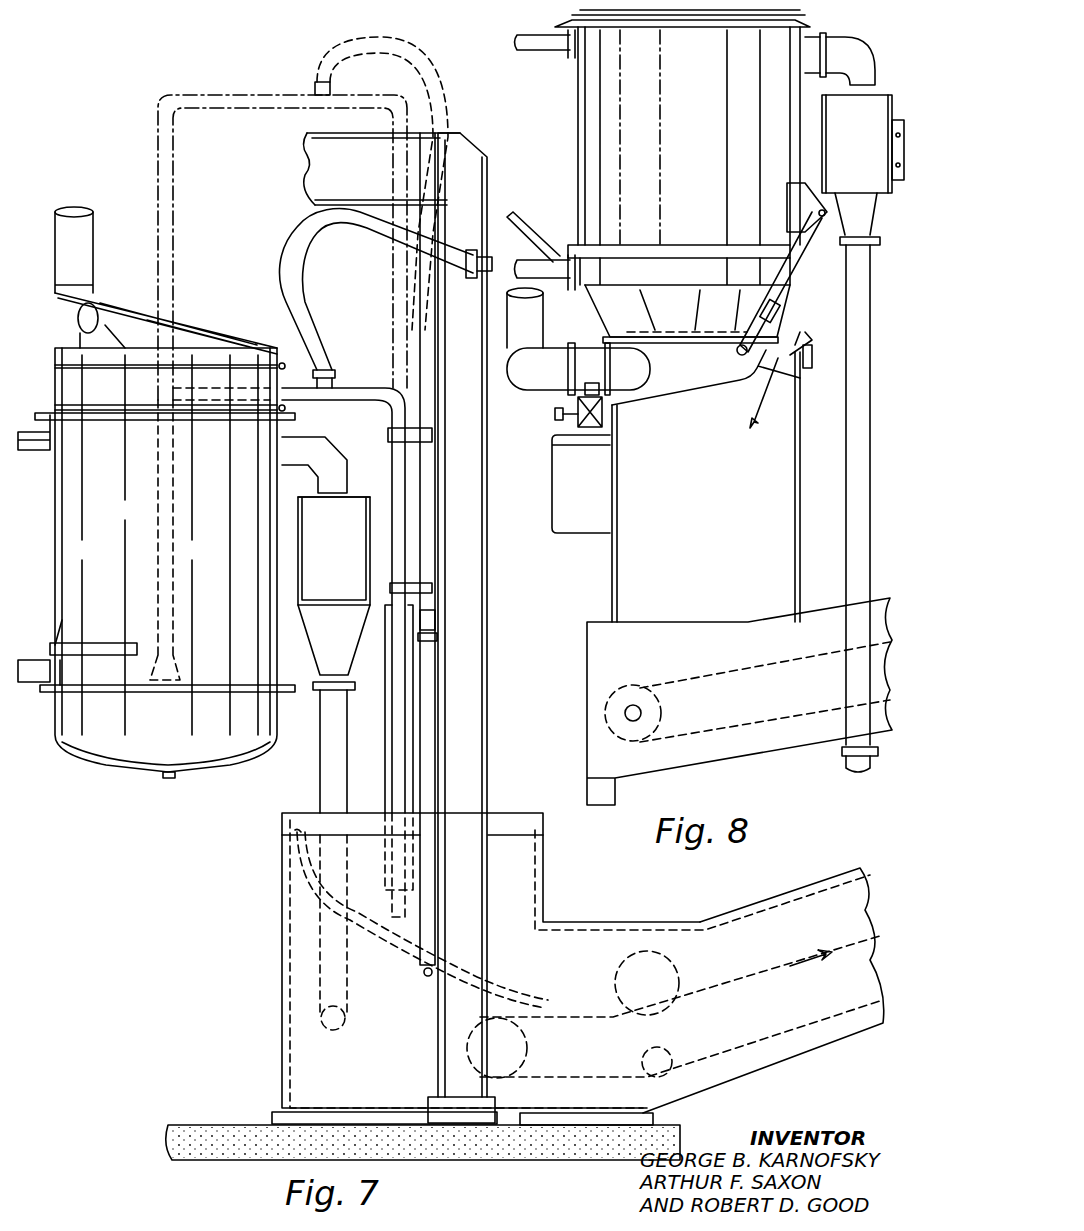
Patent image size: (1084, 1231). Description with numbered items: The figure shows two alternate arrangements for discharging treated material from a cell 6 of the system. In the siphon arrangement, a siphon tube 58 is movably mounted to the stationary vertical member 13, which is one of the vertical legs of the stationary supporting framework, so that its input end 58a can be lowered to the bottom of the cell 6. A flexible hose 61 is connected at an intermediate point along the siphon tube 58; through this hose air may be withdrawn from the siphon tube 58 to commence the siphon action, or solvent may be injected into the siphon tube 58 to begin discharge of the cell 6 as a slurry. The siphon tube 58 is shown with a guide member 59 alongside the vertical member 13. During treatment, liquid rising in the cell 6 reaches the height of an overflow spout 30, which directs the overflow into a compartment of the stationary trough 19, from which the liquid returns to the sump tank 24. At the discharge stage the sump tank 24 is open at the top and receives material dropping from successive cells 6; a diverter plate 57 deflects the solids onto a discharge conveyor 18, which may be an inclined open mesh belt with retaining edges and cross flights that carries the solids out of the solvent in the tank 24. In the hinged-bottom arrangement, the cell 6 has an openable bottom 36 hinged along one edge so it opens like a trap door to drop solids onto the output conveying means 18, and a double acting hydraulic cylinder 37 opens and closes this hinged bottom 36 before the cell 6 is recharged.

In FIG. 7, the cell 6 is at (68, 535).
In FIG. 8, the cell 6 is at (590, 102).
In FIG. 7, the stationary vertical member 13 is at (478, 610).
In FIG. 7, the discharge conveyor 18 is at (582, 1017).
In FIG. 8, the discharge conveyor 18 is at (693, 675).
In FIG. 7, the stationary trough 19 is at (302, 592).
In FIG. 7, the sump tank 24 is at (295, 967).
In FIG. 8, the sump tank 24 is at (590, 700).
In FIG. 7, the overflow spout 30 is at (333, 470).
In FIG. 8, the openable bottom 36 is at (688, 380).
In FIG. 8, the double acting hydraulic cylinder 37 is at (765, 292).
In FIG. 7, the diverter plate 57 is at (300, 864).
In FIG. 7, the siphon tube 58 is at (363, 388).
In FIG. 7, the input end 58a is at (180, 670).
In FIG. 7, the sleeve 59 is at (393, 665).
In FIG. 7, the flexible hose 61 is at (277, 283).